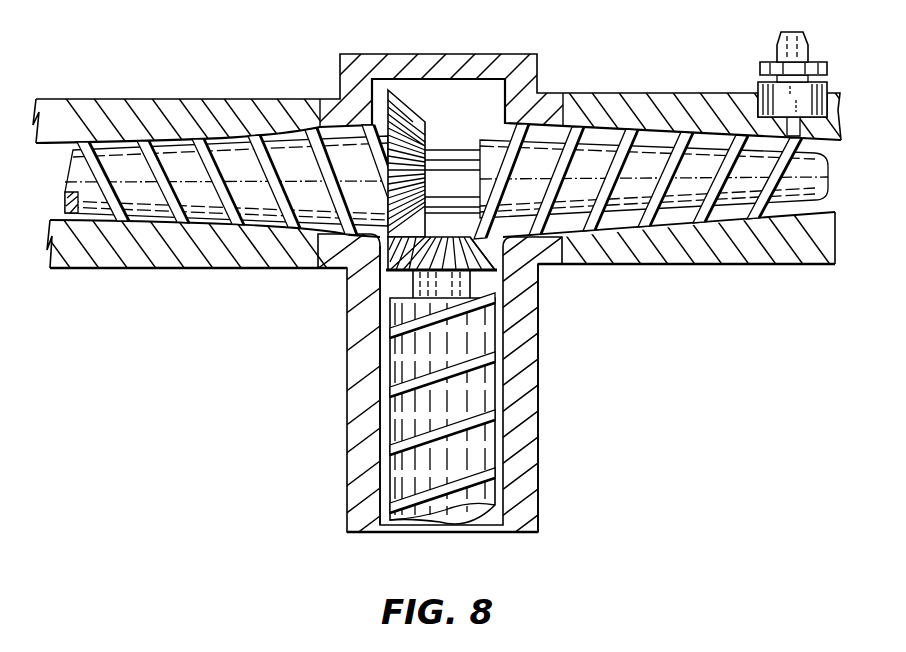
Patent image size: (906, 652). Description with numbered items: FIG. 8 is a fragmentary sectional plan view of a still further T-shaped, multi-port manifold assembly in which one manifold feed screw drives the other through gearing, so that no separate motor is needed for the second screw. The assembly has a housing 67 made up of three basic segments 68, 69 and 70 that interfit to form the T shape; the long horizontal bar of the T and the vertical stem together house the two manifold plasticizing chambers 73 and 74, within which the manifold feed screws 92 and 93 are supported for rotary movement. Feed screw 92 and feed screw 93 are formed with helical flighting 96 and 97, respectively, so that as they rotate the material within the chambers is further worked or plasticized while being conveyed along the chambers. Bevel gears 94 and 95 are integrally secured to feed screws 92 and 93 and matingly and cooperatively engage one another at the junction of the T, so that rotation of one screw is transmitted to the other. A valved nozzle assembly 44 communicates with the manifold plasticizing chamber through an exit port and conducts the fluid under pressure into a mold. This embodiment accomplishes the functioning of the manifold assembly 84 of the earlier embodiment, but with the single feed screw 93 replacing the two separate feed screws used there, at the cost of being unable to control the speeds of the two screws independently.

The nozzle assembly 44 is at (757, 54).
The housing 67 is at (545, 482).
The housing segment 68 is at (540, 427).
The housing segment 69 is at (693, 247).
The housing segment 70 is at (170, 253).
The manifold plasticizing chamber 73 is at (383, 358).
The manifold plasticizing chamber 74 is at (655, 135).
The manifold assembly 84 is at (343, 293).
The manifold feed screw 92 is at (487, 366).
The manifold feed screw 93 is at (603, 122).
The bevel gear 94 is at (483, 257).
The bevel gear 95 is at (396, 108).
The flighting 96 is at (383, 391).
The flighting 97 is at (203, 140).